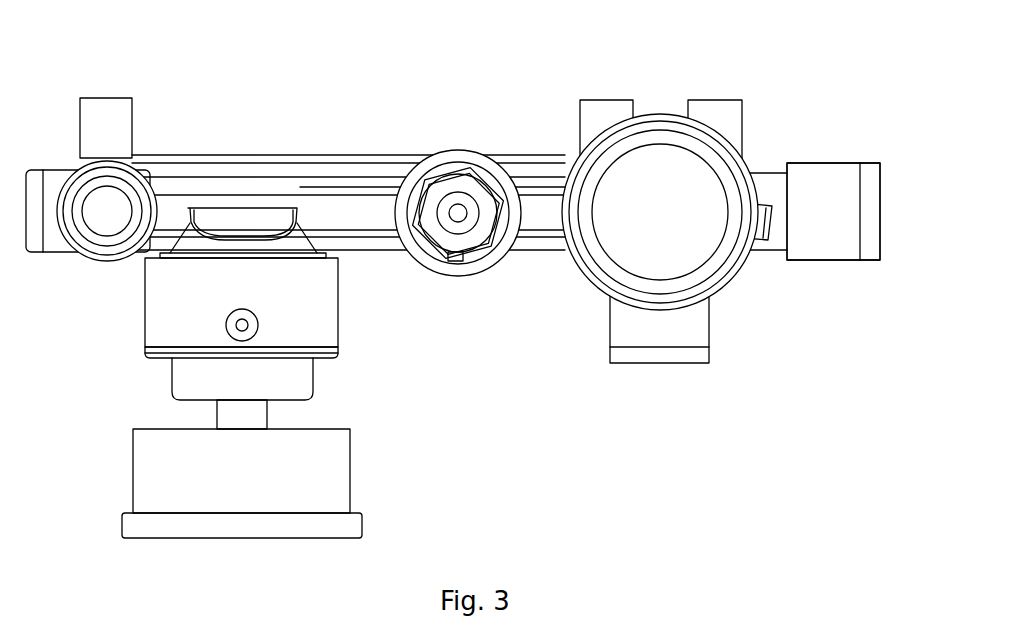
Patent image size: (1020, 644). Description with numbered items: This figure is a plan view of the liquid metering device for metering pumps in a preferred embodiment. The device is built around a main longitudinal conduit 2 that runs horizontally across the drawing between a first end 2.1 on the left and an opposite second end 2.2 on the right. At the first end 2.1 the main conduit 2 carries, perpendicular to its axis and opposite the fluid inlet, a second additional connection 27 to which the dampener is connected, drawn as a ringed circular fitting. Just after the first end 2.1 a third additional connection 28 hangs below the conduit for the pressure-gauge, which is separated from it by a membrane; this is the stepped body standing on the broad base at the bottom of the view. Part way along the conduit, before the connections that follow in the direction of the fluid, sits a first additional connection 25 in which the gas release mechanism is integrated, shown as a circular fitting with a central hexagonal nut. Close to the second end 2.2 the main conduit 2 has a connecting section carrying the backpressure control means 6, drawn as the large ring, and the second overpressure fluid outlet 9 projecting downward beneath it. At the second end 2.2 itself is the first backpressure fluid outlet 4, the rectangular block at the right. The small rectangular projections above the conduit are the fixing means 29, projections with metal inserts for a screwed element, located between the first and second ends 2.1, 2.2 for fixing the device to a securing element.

The main longitudinal conduit 2 is at (343, 213).
The first end 2.1 is at (55, 240).
The second end 2.2 is at (875, 260).
The first backpressure fluid outlet 4 is at (878, 208).
The backpressure control means 6 is at (733, 278).
The second overpressure fluid outlet 9 is at (660, 365).
The first additional connection 25 is at (441, 160).
The second additional connection 27 is at (80, 193).
The third additional connection 28 is at (162, 465).
The fixing means 29 is at (112, 120).